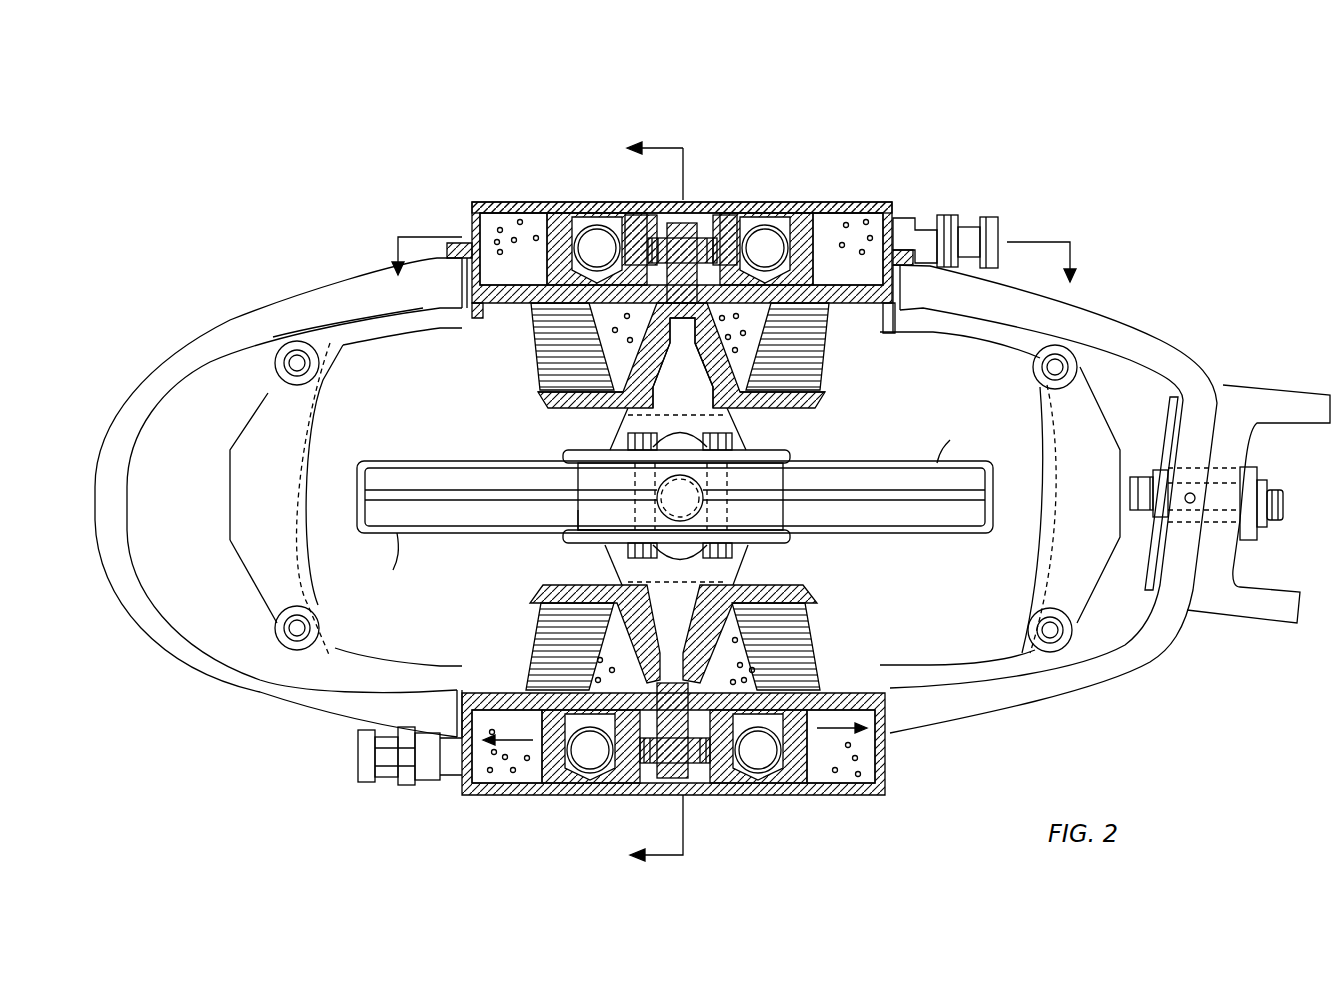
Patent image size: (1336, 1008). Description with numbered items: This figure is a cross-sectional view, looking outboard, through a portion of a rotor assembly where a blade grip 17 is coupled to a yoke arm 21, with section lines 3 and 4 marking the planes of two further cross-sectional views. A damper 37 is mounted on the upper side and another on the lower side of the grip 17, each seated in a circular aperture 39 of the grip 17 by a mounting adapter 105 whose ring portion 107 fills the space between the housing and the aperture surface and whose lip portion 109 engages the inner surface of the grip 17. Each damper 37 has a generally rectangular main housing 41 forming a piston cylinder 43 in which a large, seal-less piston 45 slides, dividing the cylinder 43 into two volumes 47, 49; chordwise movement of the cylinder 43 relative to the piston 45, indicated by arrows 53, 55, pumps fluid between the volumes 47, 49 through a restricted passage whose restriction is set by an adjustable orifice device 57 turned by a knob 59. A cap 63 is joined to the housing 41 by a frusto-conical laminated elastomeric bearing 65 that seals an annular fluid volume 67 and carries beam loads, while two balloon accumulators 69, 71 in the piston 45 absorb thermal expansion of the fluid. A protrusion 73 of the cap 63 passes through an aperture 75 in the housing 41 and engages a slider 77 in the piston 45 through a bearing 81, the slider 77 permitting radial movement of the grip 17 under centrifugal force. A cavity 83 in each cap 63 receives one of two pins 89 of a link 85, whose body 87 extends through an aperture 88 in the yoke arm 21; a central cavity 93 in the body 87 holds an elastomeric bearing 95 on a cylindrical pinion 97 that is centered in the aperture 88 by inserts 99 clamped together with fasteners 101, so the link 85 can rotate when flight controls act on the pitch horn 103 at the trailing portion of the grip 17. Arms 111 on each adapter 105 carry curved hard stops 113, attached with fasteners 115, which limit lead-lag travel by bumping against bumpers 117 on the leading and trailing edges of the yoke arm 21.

The grip 17 is at (1166, 320).
The yoke arm 21 is at (481, 527).
The damper 37 is at (772, 195).
The aperture 39 is at (458, 293).
The main housing 41 is at (866, 200).
The piston cylinder 43 is at (500, 272).
The piston 45 is at (535, 212).
The cylinder volume 47 is at (838, 240).
The cylinder volume 49 is at (470, 232).
The arrow 53 is at (820, 752).
The arrow 55 is at (516, 747).
The adjustable orifice device 57 is at (918, 210).
The knob 59 is at (990, 226).
The cap 63 is at (806, 404).
The laminated elastomeric bearing 65 is at (806, 350).
The annular fluid volume 67 is at (735, 372).
The balloon accumulator 69 is at (765, 246).
The balloon accumulator 71 is at (596, 245).
The protrusion 73 is at (688, 250).
The aperture 75 is at (562, 322).
The slider 77 is at (638, 236).
The bearing 81 is at (722, 247).
The cavity 83 is at (682, 365).
The link 85 is at (755, 560).
The body 87 is at (622, 432).
The aperture 88 is at (597, 519).
The pin 89 is at (600, 402).
The central cavity 93 is at (703, 428).
The elastomeric bearing 95 is at (672, 553).
The pinion 97 is at (700, 511).
The aperture insert 99 is at (788, 456).
The fastener 101 is at (642, 470).
The pitch horn 103 is at (1222, 603).
The mounting adapter 105 is at (432, 340).
The ring portion 107 is at (898, 283).
The lip portion 109 is at (910, 320).
The arm 111 is at (990, 340).
The curved hard stop 113 is at (250, 552).
The fastener 115 is at (297, 365).
The bumper 117 is at (393, 570).
The section line 3- 3 is at (655, 503).
The section line 4- 4 is at (733, 259).